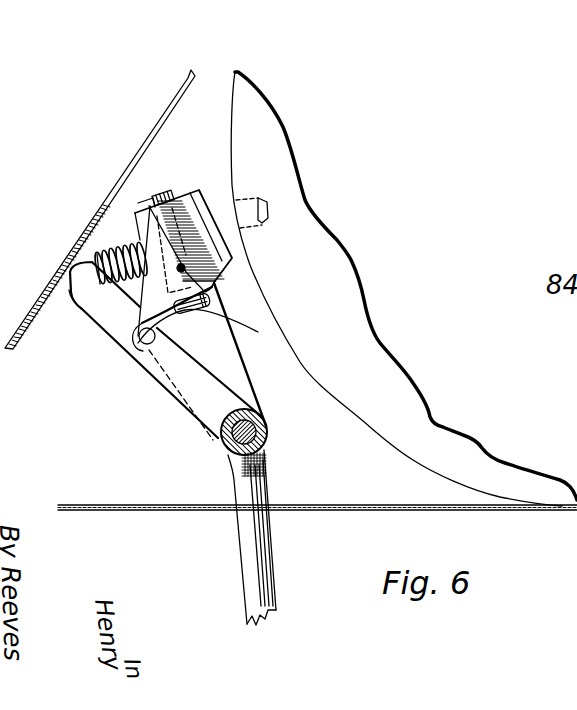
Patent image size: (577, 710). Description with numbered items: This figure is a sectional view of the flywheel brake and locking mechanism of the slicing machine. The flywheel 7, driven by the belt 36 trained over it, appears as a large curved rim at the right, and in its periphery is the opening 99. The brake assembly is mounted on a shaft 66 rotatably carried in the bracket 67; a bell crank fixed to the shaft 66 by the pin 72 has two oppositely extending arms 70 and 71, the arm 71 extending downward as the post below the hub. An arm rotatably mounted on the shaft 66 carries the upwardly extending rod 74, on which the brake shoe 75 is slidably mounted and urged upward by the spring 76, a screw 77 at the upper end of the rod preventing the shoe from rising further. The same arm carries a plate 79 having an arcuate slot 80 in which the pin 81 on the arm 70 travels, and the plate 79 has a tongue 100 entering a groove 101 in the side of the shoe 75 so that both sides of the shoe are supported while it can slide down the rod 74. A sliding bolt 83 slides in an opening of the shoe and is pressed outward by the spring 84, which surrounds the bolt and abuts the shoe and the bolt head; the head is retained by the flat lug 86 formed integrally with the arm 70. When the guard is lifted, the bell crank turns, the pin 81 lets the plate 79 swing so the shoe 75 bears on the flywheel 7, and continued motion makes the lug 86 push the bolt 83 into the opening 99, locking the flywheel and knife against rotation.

The flywheel 7 is at (232, 105).
The belt 36 is at (152, 140).
The shaft 66 is at (226, 452).
The bracket 67 is at (268, 427).
The arm 70 is at (100, 313).
The arm 71 is at (249, 543).
The pin 72 is at (231, 440).
The rod 74 is at (210, 303).
The brake shoe 75 is at (204, 188).
The spring 76 is at (214, 288).
The screw 77 is at (146, 202).
The plate 79 is at (239, 377).
The arcuate slot 80 is at (215, 331).
The pin 81 is at (137, 348).
The sliding bolt 83 is at (120, 250).
The spring 84 is at (125, 258).
The flat lug 86 is at (80, 303).
The opening 99 is at (260, 200).
The tongue 100 is at (168, 200).
The groove 101 is at (185, 267).